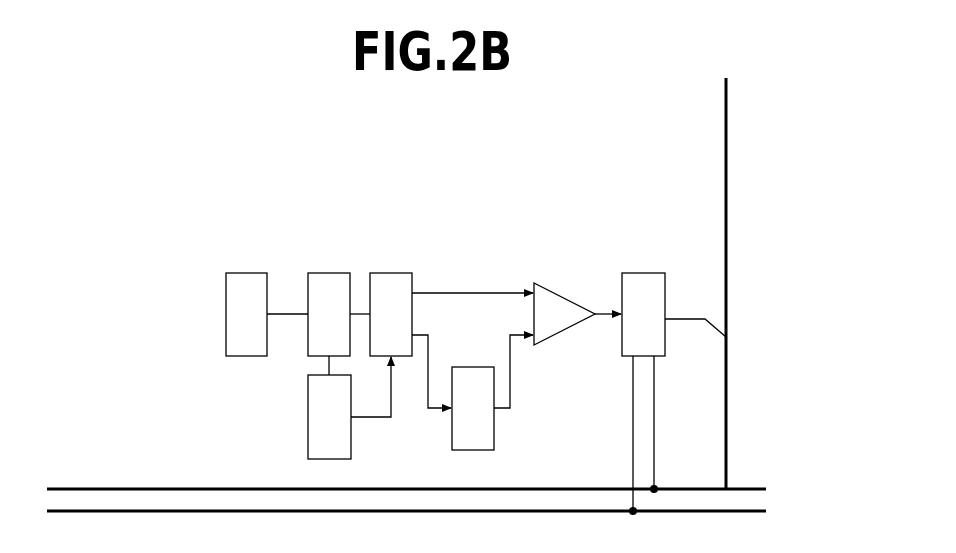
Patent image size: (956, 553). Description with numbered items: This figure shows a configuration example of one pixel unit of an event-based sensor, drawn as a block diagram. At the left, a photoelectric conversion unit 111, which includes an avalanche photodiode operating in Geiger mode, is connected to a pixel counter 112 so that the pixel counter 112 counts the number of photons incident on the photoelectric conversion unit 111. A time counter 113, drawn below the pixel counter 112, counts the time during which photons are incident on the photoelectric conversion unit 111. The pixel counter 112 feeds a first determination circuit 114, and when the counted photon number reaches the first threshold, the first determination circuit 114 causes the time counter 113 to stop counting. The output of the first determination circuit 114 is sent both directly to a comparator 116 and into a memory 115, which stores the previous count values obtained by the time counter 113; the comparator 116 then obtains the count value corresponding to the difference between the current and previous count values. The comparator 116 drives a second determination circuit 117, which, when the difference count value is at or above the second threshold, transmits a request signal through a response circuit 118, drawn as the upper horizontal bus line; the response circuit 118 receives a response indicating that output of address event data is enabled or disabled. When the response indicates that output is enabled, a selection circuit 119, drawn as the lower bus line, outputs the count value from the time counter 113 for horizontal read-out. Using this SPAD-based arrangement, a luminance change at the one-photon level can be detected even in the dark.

The photoelectric conversion unit 111 is at (247, 282).
The pixel counter 112 is at (331, 282).
The time counter 113 is at (318, 416).
The first determination circuit 114 is at (393, 282).
The memory 115 is at (487, 434).
The comparator 116 is at (553, 302).
The second determination circuit 117 is at (648, 282).
The response circuit 118 is at (757, 489).
The selection circuit 119 is at (757, 511).